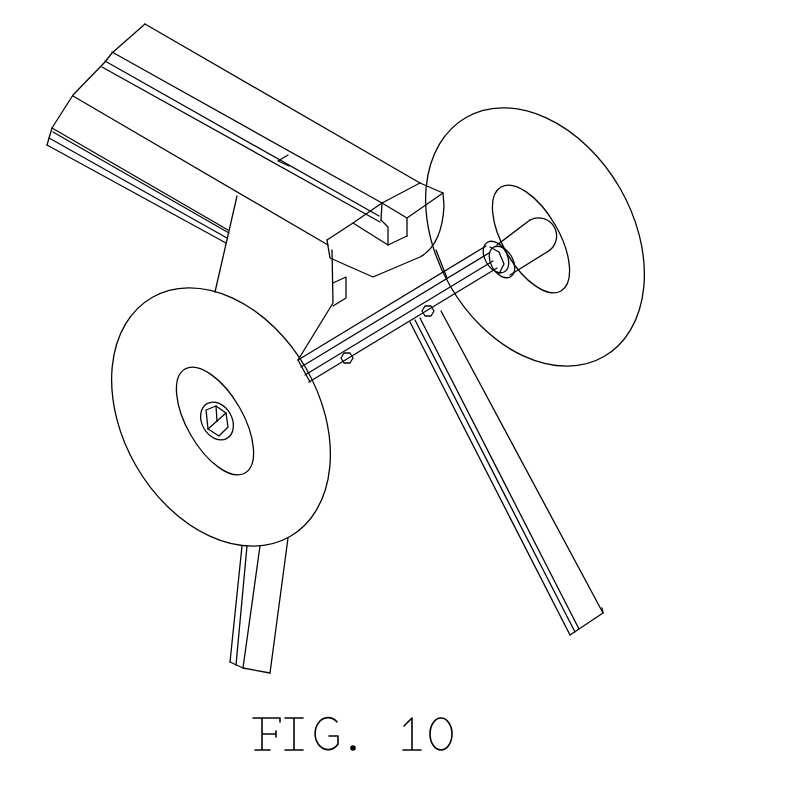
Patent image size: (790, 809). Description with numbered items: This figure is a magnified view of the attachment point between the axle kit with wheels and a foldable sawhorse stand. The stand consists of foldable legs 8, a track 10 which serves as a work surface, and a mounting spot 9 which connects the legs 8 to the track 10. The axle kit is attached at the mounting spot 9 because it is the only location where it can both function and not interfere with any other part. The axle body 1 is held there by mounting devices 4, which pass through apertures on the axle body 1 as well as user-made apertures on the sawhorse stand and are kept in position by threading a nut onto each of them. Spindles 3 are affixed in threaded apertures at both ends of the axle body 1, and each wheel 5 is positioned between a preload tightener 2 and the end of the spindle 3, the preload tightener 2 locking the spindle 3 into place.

The axle body 1 is at (390, 330).
The preload tightener 2 is at (493, 247).
The spindle 3 is at (207, 423).
The mounting device 4 is at (347, 362).
The wheel 5 is at (615, 250).
The foldable leg 8 is at (263, 627).
The mounting spot 9 is at (257, 270).
The track 10 is at (252, 104).